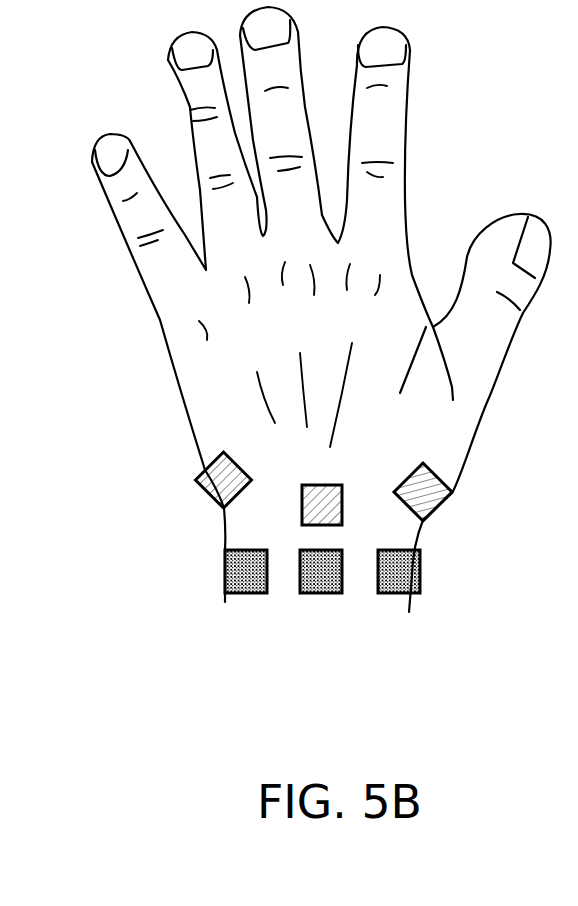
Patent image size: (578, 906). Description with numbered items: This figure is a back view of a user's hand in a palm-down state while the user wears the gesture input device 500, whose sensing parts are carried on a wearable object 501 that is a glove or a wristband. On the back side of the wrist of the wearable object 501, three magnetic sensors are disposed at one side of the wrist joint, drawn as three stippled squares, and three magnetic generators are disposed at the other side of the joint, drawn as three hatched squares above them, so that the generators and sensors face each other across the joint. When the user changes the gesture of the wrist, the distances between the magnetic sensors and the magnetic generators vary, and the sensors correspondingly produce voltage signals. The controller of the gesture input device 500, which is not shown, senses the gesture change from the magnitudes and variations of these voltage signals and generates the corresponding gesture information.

The gesture input device 500 is at (335, 367).
The wearable object 501 is at (482, 425).